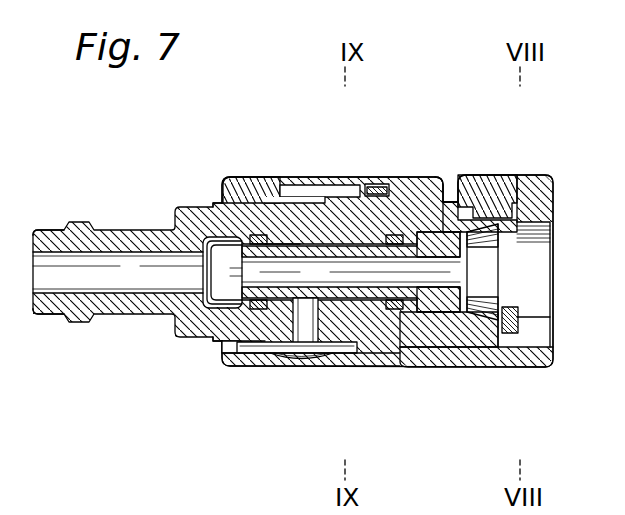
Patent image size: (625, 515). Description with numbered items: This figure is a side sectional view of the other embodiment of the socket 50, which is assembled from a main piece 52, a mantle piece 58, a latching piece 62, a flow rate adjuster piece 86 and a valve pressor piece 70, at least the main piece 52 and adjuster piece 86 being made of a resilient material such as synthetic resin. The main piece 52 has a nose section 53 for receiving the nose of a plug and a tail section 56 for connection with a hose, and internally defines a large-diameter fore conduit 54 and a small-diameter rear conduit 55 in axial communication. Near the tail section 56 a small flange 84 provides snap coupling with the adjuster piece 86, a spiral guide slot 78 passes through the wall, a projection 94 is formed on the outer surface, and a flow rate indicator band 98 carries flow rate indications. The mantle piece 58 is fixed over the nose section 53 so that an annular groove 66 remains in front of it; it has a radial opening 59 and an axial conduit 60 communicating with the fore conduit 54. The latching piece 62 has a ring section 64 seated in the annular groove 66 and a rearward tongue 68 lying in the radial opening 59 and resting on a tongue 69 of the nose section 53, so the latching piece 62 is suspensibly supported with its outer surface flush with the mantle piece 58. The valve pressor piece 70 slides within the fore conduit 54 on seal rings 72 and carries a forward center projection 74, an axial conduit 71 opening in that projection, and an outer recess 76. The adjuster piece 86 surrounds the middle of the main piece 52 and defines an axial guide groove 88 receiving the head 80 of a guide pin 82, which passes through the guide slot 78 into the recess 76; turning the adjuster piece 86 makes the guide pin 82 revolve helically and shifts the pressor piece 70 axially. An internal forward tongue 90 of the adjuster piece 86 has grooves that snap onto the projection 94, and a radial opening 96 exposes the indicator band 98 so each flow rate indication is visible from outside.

The socket 50 is at (437, 110).
The main piece 52 is at (187, 217).
The nose section 53 is at (430, 233).
The fore conduit 54 is at (458, 348).
The rear conduit 55 is at (50, 278).
The tail section 56 is at (44, 240).
The mantle piece 58 is at (535, 368).
The radial opening 59 is at (445, 190).
The axial conduit 60 is at (540, 278).
The latching piece 62 is at (547, 164).
The ring section 64 is at (522, 325).
The annular groove 66 is at (517, 346).
The tongue 68 is at (465, 185).
The tongue 69 is at (549, 232).
The valve pressor piece 70 is at (240, 200).
The axial conduit 71 is at (248, 270).
The seal rings 72 is at (257, 236).
The center projection 74 is at (455, 300).
The recess 76 is at (330, 355).
The guide slot 78 is at (298, 354).
The head 80 is at (362, 366).
The guide pin 82 is at (305, 356).
The small flange 84 is at (210, 192).
The flow rate adjuster piece 86 is at (264, 190).
The guide groove 88 is at (255, 352).
The tongue 90 is at (288, 244).
The projection 94 is at (333, 190).
The radial opening 96 is at (368, 183).
The flow rate indicator band 98 is at (378, 186).